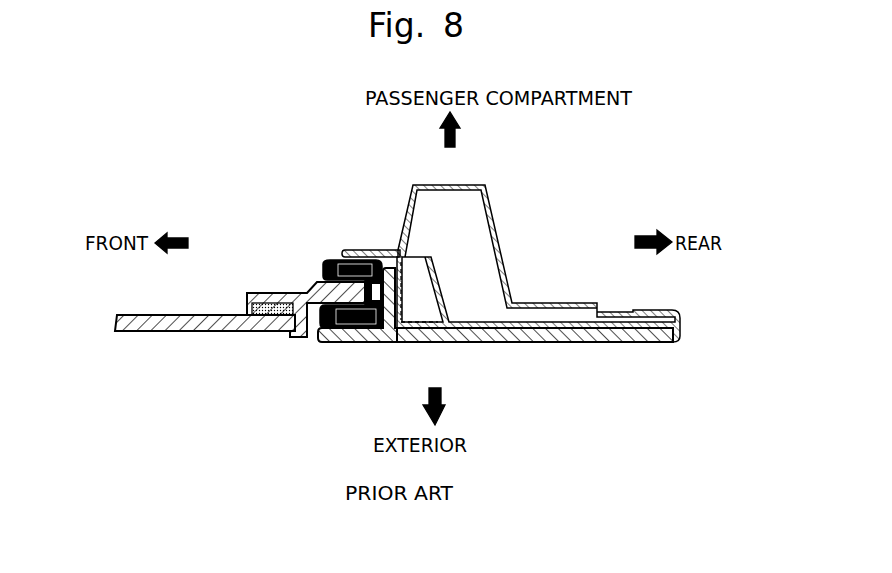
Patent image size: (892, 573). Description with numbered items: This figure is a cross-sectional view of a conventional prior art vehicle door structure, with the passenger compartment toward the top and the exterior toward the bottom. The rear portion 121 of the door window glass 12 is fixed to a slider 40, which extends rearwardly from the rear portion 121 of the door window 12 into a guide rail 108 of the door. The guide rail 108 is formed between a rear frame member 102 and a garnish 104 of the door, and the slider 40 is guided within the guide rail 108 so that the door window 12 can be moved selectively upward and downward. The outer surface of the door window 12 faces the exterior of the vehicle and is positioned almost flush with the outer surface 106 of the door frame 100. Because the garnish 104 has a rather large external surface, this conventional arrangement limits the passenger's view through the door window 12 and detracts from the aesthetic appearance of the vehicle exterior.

The door window glass 12 is at (142, 333).
The slider 40 is at (316, 285).
The rear portion 121 is at (275, 334).
The door frame 100 is at (508, 228).
The rear frame member 102 is at (364, 252).
The garnish 104 is at (382, 340).
The outer surface 106 is at (508, 342).
The guide rail 108 is at (335, 271).